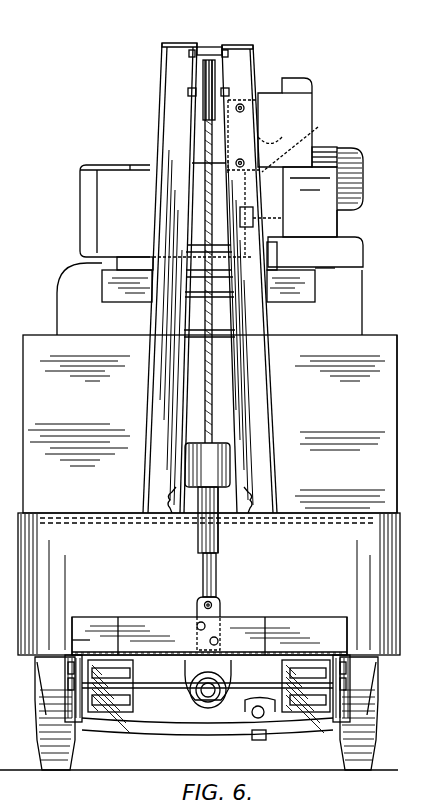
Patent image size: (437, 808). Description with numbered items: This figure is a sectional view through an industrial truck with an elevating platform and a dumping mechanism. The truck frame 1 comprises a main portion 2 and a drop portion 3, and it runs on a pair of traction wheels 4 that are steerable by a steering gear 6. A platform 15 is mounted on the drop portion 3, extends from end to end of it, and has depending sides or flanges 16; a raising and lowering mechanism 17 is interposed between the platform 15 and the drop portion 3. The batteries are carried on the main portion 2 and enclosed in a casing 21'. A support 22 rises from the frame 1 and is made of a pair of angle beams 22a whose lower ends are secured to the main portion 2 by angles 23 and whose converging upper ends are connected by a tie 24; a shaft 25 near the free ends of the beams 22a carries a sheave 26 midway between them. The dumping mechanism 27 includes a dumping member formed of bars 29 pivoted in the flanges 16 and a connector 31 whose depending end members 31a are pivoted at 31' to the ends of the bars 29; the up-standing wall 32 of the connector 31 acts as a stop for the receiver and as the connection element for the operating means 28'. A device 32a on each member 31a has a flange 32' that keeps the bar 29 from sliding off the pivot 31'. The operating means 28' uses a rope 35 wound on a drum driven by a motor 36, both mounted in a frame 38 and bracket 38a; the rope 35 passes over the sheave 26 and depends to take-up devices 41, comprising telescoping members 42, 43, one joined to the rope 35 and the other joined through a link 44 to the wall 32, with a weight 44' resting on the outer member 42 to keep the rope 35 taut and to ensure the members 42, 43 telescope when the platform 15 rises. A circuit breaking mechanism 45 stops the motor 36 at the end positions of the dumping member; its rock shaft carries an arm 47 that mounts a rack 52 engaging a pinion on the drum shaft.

The truck frame 1 is at (354, 424).
The main portion 2 is at (82, 530).
The drop portion 3 is at (110, 728).
The traction wheels 4 is at (48, 735).
The steering gear 6 is at (248, 716).
The platform 15 is at (265, 652).
The depending sides or flanges 16 is at (80, 724).
The raising and lowering mechanism 17 is at (132, 690).
The casing 21' is at (210, 424).
The support 22 is at (258, 328).
The angle plates or beams 22a is at (172, 75).
The angles 23 is at (165, 500).
The tie 24 is at (210, 48).
The shaft 25 is at (188, 92).
The sheave 26 is at (202, 115).
The dumping mechanism 27 is at (363, 223).
The means for operating the dumping member 28' is at (209, 239).
The bars 29 is at (62, 705).
The connector 31 is at (121, 622).
The depending end members 31a is at (66, 670).
The pivot 31' is at (206, 688).
The up-standing wall 32 is at (209, 622).
The device 32a is at (60, 650).
The flange 32' is at (86, 620).
The rope or flexible element 35 is at (212, 388).
The motor 36 is at (350, 150).
The frame 38 is at (116, 233).
The bracket 38a is at (348, 258).
The take-up devices 41 is at (234, 520).
The outer telescoping member 42 is at (198, 537).
The inner telescoping member 43 is at (203, 570).
The link 44 is at (227, 618).
The weight 44' is at (250, 453).
The circuit breaking mechanism 45 is at (304, 105).
The arm 47 is at (289, 138).
The rack 52 is at (245, 202).